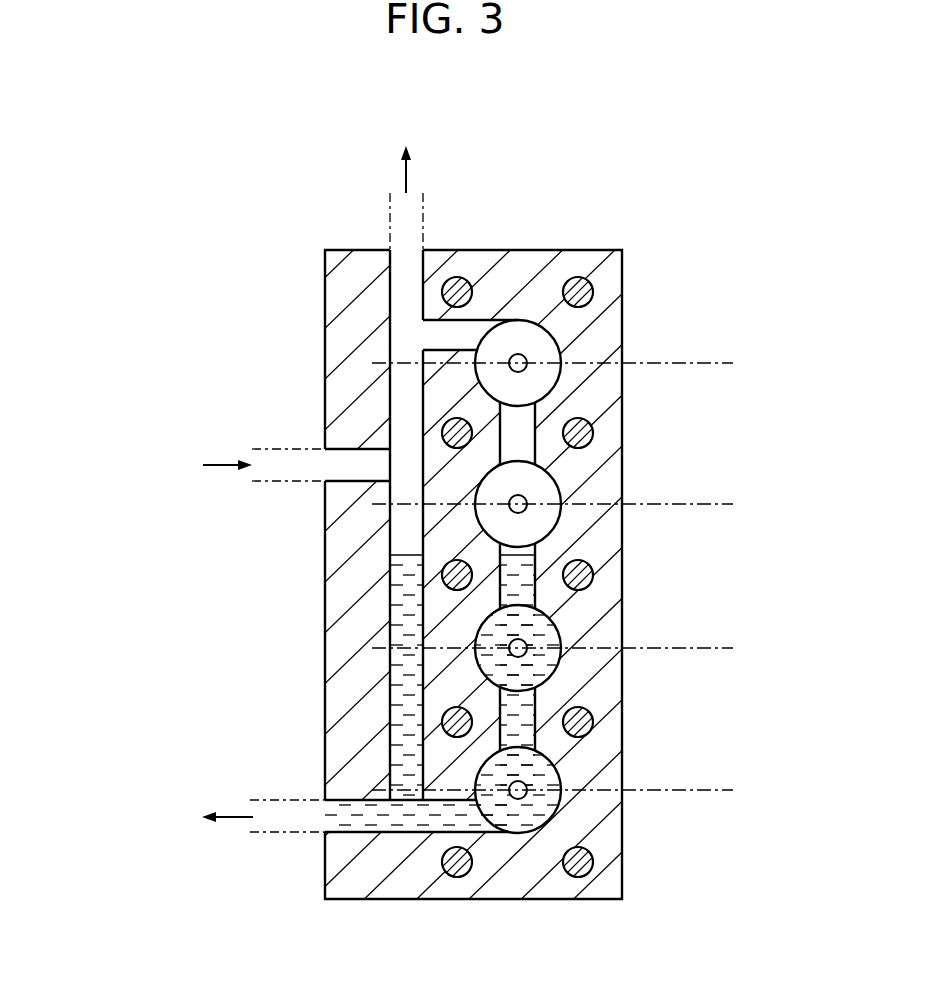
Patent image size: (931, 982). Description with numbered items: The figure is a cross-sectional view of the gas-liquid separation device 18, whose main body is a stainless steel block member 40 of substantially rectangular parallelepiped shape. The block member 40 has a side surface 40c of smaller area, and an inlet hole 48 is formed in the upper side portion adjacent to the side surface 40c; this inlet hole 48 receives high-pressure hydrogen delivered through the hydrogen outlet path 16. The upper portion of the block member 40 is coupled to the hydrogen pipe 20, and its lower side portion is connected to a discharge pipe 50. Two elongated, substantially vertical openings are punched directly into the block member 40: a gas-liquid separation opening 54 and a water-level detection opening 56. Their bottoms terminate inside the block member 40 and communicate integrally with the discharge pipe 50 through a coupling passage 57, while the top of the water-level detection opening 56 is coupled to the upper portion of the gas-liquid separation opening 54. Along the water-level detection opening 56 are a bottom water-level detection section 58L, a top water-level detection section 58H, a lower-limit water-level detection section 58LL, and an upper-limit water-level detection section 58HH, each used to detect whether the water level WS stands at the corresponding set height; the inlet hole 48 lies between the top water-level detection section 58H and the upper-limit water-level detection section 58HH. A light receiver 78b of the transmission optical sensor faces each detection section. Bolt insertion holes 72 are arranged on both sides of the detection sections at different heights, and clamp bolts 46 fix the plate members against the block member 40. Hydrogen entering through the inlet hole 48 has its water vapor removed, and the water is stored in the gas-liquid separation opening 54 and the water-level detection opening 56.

The block member 40 is at (511, 97).
The gas-liquid separation device 18 is at (552, 97).
The side surface 40c is at (325, 645).
The clamp bolts 46 is at (594, 294).
The bolt insertion holes 72 is at (578, 294).
The hydrogen pipe 20 is at (390, 218).
The gas-liquid separation opening 54 is at (407, 603).
The water level WS is at (518, 552).
The inlet hole 48 is at (347, 450).
The hydrogen outlet path 16 is at (258, 487).
The discharge pipe 50 is at (293, 797).
The coupling passage 57 is at (400, 832).
The water-level detection opening 56 is at (506, 432).
The upper-limit water-level detection section 58HH is at (548, 350).
The light receiver 78b is at (527, 369).
The top water-level detection section 58H is at (548, 492).
The bottom water-level detection section 58L is at (548, 634).
The lower-limit water-level detection section 58LL is at (548, 778).